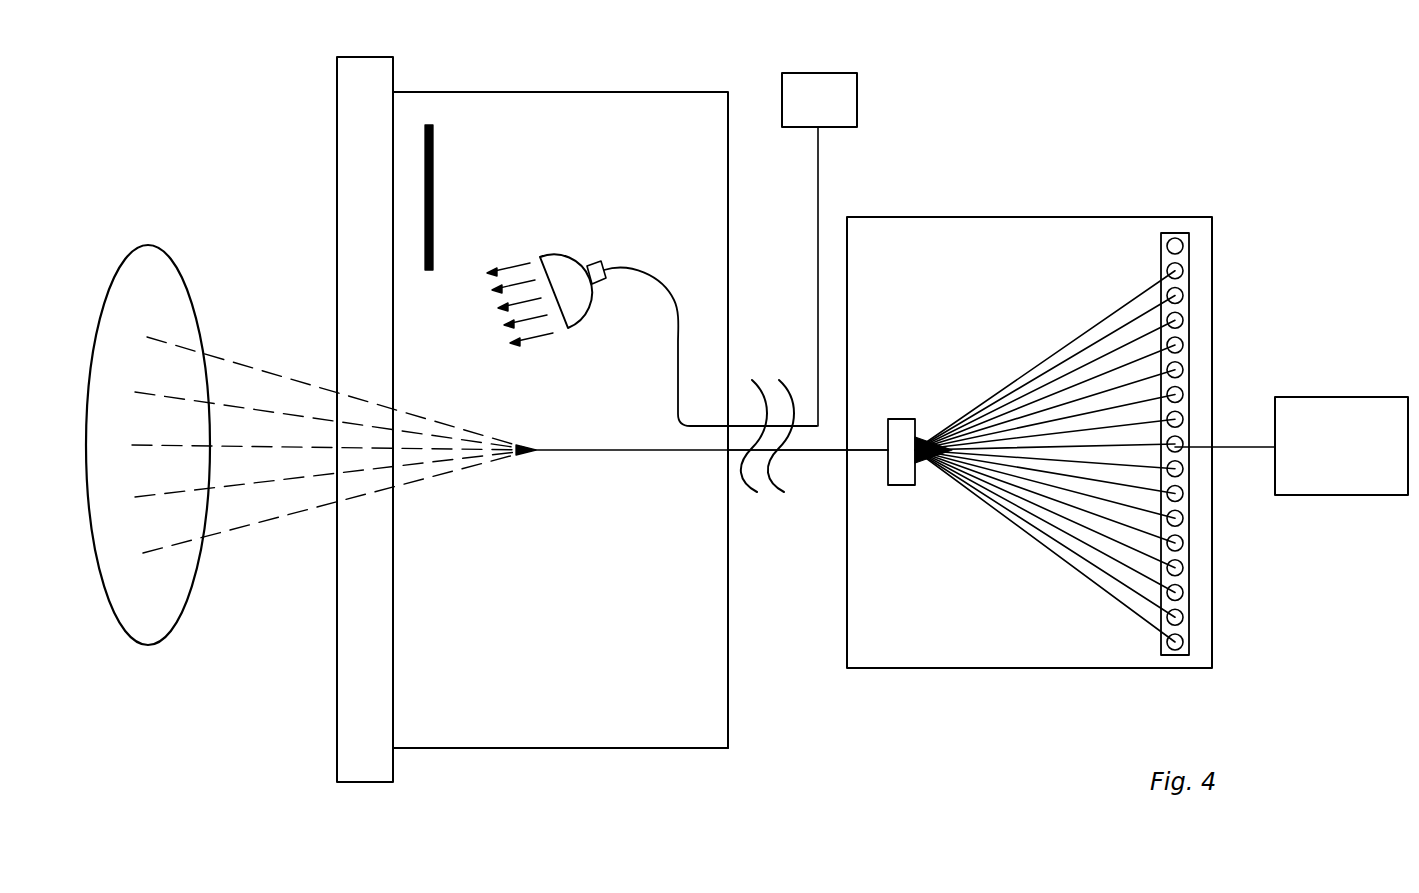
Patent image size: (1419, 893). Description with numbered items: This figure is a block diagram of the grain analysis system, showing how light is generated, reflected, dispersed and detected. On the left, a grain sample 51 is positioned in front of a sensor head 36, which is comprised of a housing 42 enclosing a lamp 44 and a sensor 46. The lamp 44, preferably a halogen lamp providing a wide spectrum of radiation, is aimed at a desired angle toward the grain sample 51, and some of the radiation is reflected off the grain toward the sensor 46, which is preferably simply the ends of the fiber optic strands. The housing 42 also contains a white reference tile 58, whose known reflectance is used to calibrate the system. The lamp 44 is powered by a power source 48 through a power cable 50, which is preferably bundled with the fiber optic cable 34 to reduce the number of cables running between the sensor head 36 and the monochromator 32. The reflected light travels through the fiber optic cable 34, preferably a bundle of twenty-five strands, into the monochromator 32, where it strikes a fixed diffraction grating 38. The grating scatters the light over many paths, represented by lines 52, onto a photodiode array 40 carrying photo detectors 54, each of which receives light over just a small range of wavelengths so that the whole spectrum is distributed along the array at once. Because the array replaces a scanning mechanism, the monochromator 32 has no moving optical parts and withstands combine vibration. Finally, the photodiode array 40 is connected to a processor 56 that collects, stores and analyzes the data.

The monochromator 32 is at (918, 217).
The fiber optic cable 34 is at (805, 452).
The sensor head 36 is at (740, 563).
The fixed diffraction grating 38 is at (900, 419).
The photodiode array 40 is at (1177, 233).
The housing 42 is at (637, 92).
The lamp 44 is at (558, 265).
The sensor 46 is at (537, 453).
The power source 48 is at (810, 73).
The power cable 50 is at (818, 201).
The grain sample 51 is at (162, 283).
The lines 52 is at (1120, 347).
The photo detectors 54 is at (1184, 246).
The processor 56 is at (1370, 495).
The white reference tile 58 is at (433, 168).